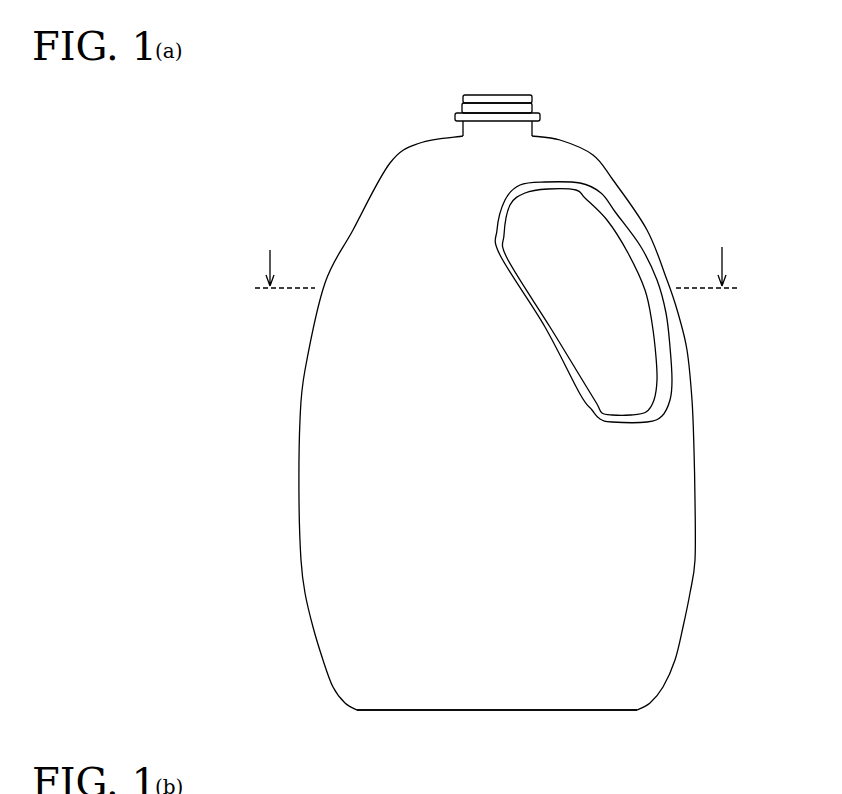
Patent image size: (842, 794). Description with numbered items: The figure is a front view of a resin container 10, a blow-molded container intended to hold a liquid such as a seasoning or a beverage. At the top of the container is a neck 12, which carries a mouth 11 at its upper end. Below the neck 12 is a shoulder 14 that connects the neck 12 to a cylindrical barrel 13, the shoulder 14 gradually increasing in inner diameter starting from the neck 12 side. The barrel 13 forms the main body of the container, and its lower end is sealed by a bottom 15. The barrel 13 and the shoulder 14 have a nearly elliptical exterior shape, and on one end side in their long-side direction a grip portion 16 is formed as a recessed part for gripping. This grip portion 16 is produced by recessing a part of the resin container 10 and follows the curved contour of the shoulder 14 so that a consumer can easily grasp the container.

The resin container 10 is at (709, 102).
The mouth 11 is at (508, 86).
The neck 12 is at (530, 98).
The barrel 13 is at (680, 471).
The shoulder 14 is at (404, 178).
The bottom 15 is at (565, 695).
The grip portion 16 is at (626, 340).